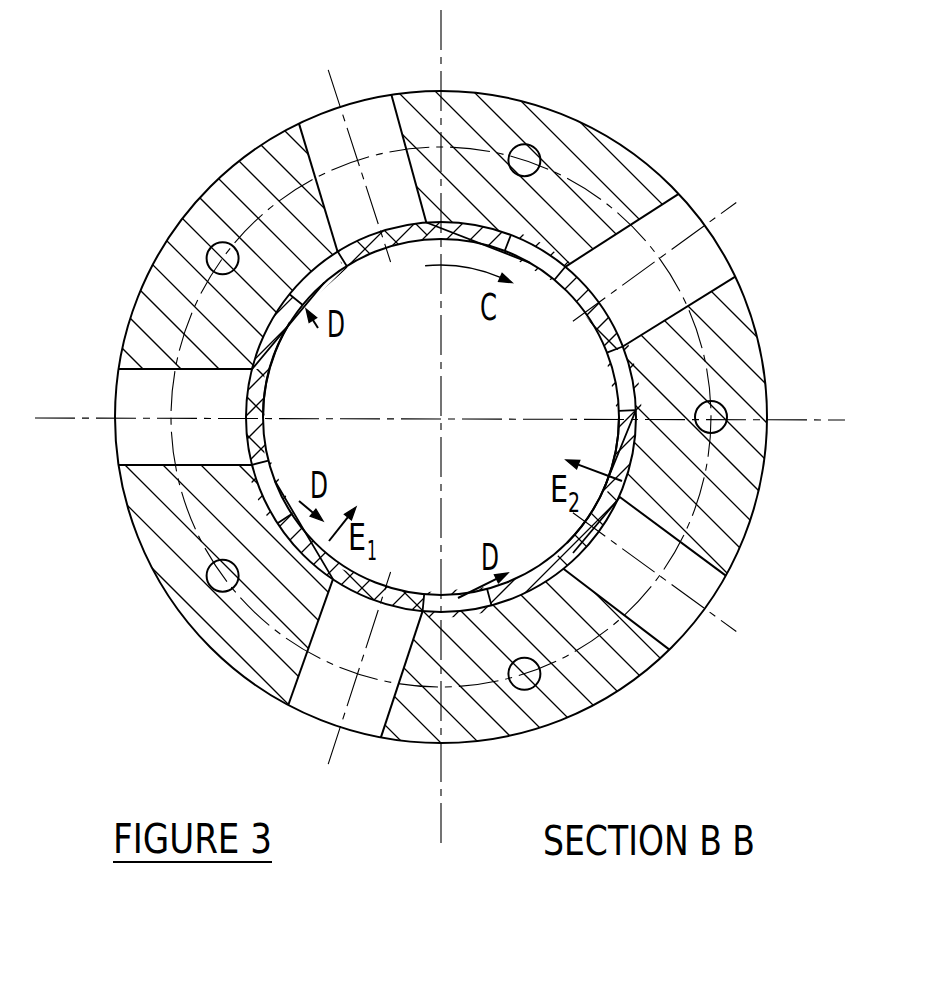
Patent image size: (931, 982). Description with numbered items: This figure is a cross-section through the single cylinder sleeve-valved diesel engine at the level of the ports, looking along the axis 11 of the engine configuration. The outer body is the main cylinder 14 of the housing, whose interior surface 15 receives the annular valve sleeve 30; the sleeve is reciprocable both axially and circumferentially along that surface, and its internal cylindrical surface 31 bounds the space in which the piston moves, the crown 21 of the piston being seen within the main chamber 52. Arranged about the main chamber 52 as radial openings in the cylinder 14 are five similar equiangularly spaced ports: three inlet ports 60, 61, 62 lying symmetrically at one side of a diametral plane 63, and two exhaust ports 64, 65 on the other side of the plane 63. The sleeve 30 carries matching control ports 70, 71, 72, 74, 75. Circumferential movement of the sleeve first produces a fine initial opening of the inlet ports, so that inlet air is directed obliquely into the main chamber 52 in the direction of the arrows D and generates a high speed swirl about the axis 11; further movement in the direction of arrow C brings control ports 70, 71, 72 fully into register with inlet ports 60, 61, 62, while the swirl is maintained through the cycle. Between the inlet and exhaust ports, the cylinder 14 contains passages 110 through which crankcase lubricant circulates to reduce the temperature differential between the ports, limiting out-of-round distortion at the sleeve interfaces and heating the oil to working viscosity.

The axis 11 is at (437, 428).
The main cylinder 14 is at (227, 642).
The interior surface 15 is at (547, 267).
The crown 21 is at (490, 408).
The valve sleeve 30 is at (268, 372).
The internal cylindrical surface 31 is at (580, 527).
The main chamber 52 is at (417, 408).
The inlet port 60 is at (143, 447).
The inlet port 61 is at (345, 130).
The inlet port 62 is at (318, 697).
The diametral plane 63 is at (440, 783).
The exhaust port 64 is at (653, 615).
The exhaust port 65 is at (698, 283).
The control port 70 is at (260, 463).
The control port 71 is at (352, 222).
The control port 72 is at (420, 597).
The control port 74 is at (540, 577).
The control port 75 is at (617, 373).
The passages 110 is at (222, 577).